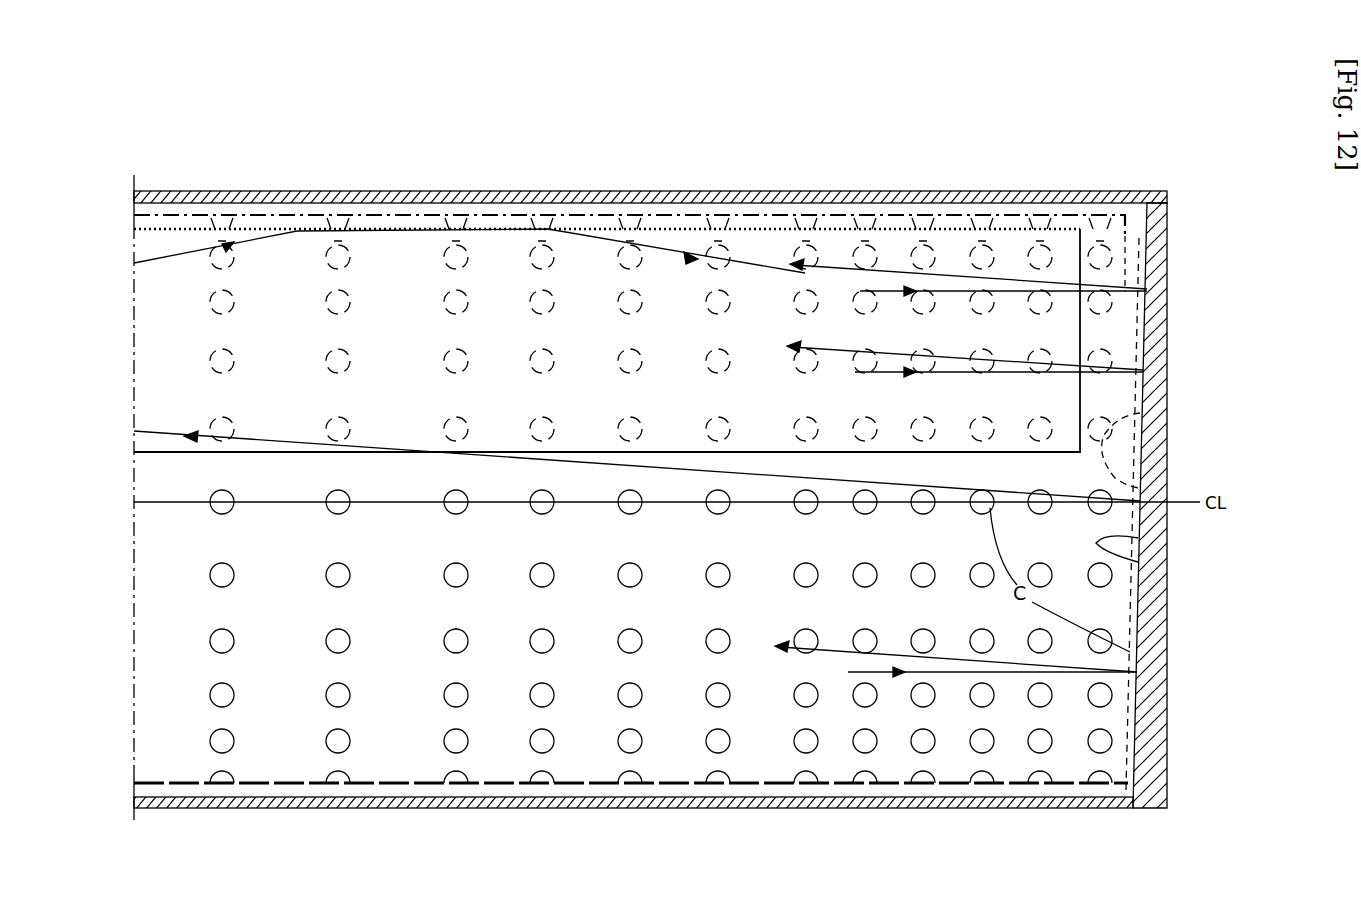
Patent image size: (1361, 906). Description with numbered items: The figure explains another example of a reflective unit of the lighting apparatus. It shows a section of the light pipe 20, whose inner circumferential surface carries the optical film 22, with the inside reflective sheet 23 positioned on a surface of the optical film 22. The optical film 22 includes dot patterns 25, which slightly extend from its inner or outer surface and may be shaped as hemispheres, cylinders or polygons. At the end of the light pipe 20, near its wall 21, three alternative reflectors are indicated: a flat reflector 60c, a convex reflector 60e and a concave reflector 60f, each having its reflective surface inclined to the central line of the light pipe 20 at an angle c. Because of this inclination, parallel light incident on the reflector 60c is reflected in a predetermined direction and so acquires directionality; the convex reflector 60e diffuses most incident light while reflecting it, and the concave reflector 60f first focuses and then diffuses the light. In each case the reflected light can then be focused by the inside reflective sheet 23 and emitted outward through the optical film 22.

The light pipe 20 is at (1152, 103).
The housing 21 is at (1078, 192).
The optical film 22 is at (228, 218).
The inside reflective sheet 23 is at (431, 229).
The dot patterns 25 is at (970, 262).
The reflector 60c is at (1138, 537).
The reflector 60e is at (1140, 413).
The reflector 60f is at (1160, 441).